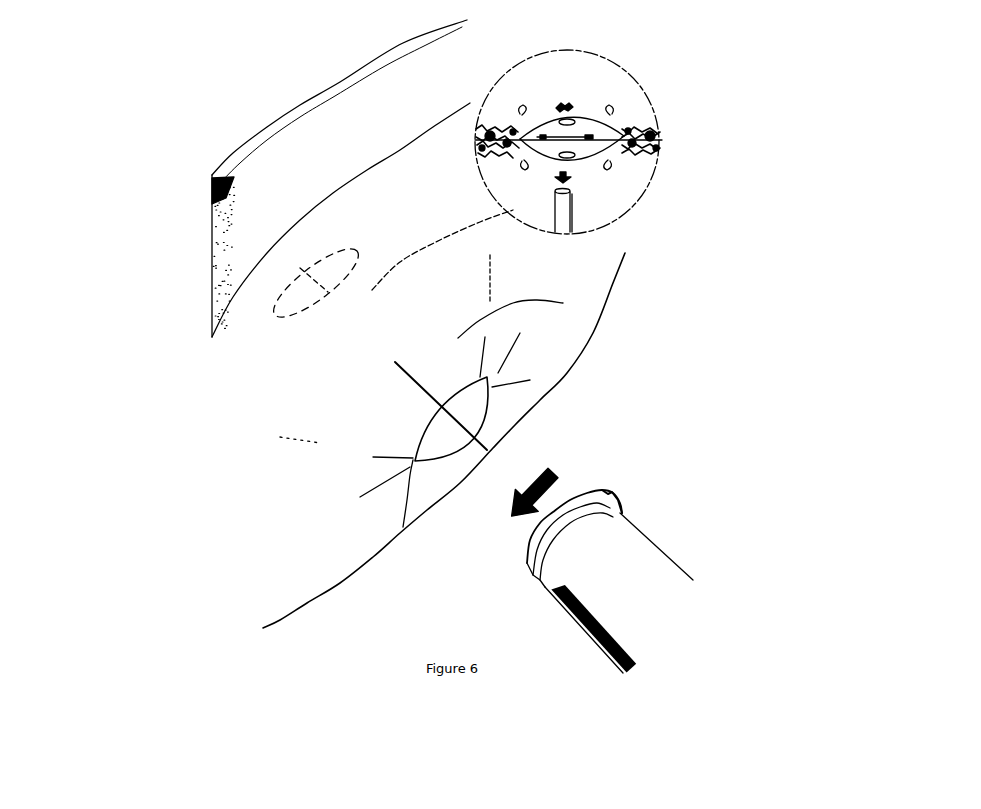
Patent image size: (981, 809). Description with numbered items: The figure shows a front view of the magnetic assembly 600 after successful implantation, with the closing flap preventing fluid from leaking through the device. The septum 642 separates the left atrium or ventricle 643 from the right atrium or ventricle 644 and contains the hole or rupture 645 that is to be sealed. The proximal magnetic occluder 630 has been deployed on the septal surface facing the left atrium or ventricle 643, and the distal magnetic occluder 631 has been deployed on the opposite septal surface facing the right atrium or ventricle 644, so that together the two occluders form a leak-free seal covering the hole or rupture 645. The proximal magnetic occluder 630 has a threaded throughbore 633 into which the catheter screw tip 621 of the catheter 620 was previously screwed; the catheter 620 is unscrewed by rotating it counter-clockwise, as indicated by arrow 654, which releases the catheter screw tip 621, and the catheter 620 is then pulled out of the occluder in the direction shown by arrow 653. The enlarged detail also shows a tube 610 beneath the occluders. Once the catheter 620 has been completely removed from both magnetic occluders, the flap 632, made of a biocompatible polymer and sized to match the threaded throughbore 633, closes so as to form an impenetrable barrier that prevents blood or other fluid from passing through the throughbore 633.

The magnetic assembly 600 is at (93, 339).
The injection tube 610 is at (573, 212).
The catheter 620 is at (663, 547).
The catheter screw tip 621 is at (612, 493).
The proximal magnetic occluder 630 is at (220, 173).
The distal magnetic occluder 631 is at (622, 284).
The flap 632 is at (458, 397).
The threaded throughbore 633 is at (290, 310).
The septum 642 is at (637, 127).
The left atrium or ventricle 643 is at (593, 73).
The right atrium or ventricle 644 is at (632, 185).
The hole or rupture 645 is at (572, 137).
The arrow 653 is at (555, 480).
The arrow 654 is at (558, 103).